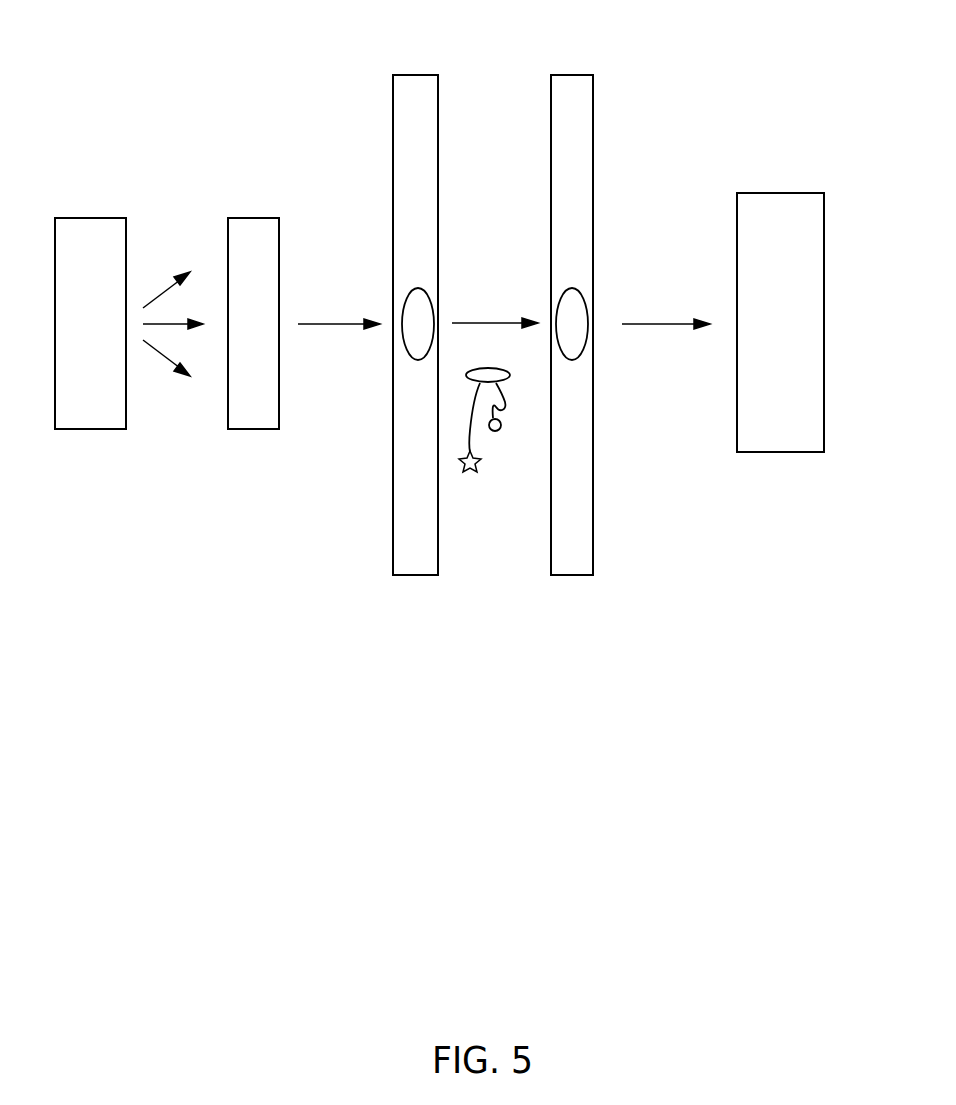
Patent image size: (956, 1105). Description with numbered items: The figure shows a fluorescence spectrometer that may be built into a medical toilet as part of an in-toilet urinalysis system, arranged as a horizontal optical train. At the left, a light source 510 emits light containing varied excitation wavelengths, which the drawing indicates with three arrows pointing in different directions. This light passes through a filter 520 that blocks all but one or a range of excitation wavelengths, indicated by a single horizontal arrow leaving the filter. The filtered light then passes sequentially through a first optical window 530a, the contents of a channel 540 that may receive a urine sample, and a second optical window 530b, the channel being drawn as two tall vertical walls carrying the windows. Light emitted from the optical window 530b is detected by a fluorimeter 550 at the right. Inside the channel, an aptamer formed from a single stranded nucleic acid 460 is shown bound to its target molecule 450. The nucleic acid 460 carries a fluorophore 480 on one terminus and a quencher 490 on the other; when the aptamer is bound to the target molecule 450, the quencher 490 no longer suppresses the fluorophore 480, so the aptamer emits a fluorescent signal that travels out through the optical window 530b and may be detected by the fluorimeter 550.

The target molecule 450 is at (499, 368).
The single stranded nucleic acid 460 is at (476, 400).
The fluorophore 480 is at (469, 474).
The quencher 490 is at (497, 432).
The light source 510 is at (88, 430).
The filter 520 is at (250, 430).
The optical window 530a is at (418, 288).
The optical window 530b is at (572, 288).
The channel 540 is at (600, 72).
The fluorimeter 550 is at (772, 452).